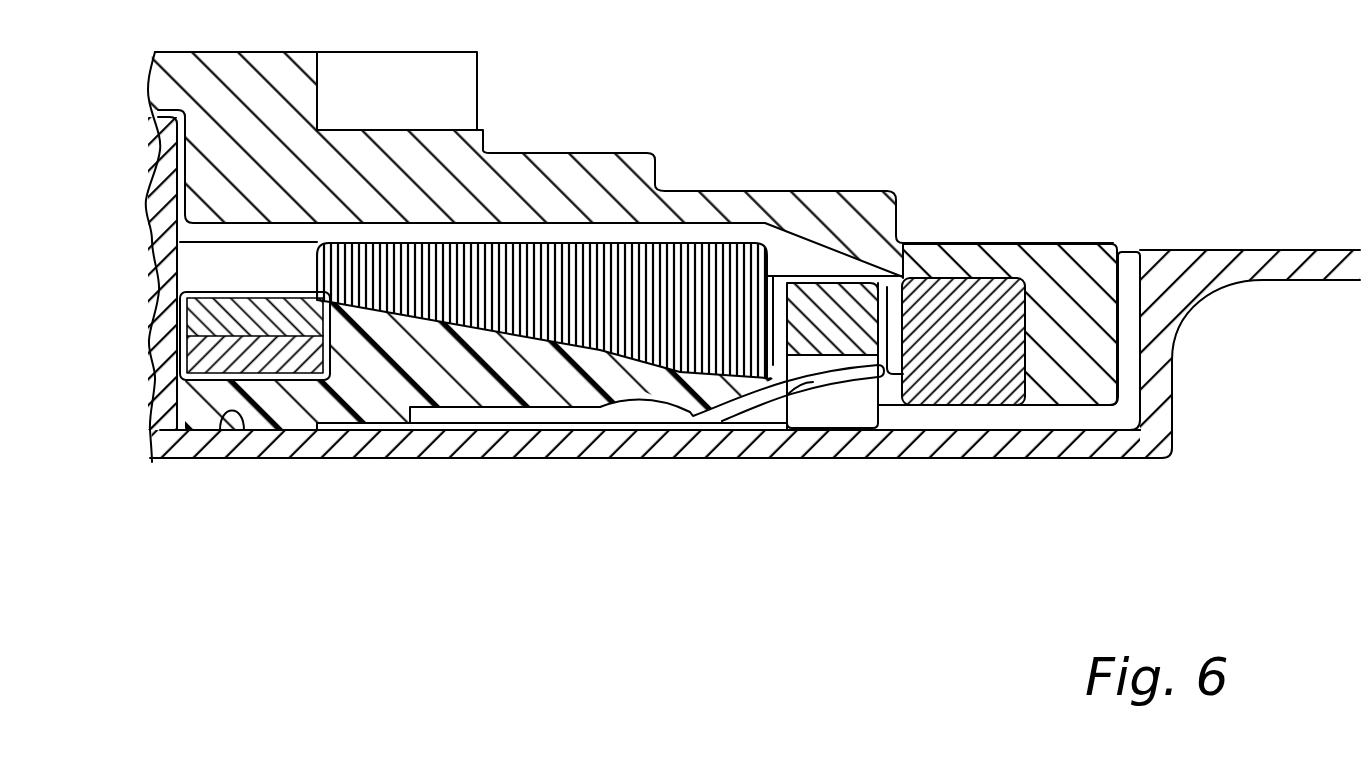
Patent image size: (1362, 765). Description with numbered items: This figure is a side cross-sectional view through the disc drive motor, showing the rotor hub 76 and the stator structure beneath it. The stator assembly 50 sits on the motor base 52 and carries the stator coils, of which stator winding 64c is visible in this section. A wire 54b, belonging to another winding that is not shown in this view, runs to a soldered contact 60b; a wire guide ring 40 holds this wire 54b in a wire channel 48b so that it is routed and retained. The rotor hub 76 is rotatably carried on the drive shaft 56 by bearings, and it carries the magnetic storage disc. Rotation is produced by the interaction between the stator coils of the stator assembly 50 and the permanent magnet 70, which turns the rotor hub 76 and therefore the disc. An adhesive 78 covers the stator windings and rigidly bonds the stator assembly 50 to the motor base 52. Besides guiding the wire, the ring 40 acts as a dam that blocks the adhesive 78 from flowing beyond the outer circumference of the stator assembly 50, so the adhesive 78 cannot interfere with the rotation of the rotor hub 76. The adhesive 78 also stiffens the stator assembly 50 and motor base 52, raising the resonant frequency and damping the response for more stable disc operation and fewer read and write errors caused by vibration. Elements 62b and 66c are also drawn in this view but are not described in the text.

The wire guide ring 40 is at (818, 315).
The wire channel 48b is at (848, 397).
The stator assembly 50 is at (172, 335).
The motor base 52 is at (1180, 428).
The wire 54b is at (433, 413).
The drive shaft 56 is at (158, 190).
The soldered contact 60b is at (484, 438).
The lead wire 62b is at (648, 410).
The stator winding 64c is at (515, 262).
The pole piece 66c is at (898, 288).
The permanent magnet 70 is at (978, 295).
The rotor hub 76 is at (1075, 325).
The adhesive 78 is at (268, 403).